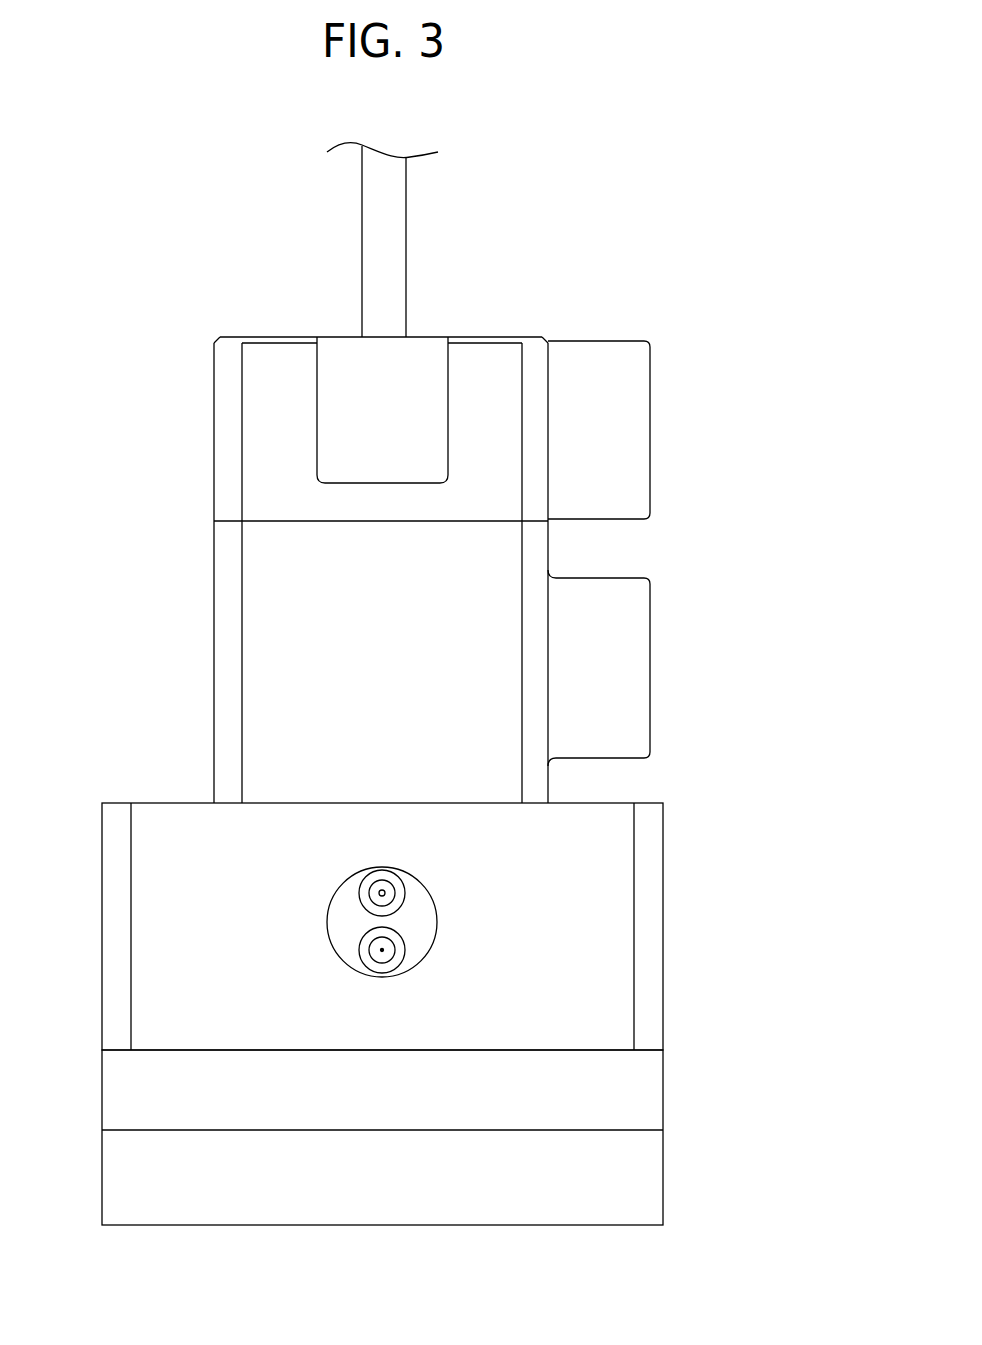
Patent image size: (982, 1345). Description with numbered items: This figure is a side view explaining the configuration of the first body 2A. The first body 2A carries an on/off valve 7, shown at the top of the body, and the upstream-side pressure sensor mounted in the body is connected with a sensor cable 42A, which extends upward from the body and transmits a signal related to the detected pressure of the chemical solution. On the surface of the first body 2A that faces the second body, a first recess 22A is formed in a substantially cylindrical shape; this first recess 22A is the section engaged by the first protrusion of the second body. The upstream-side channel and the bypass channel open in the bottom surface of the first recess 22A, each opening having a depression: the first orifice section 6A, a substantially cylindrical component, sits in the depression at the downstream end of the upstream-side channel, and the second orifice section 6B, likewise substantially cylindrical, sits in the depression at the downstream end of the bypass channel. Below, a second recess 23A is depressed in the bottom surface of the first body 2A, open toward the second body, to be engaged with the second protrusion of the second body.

The first body 2A is at (745, 224).
The on/off valve 7 is at (208, 327).
The sensor cable 42A is at (398, 233).
The first recess 22A is at (416, 922).
The first orifice section 6A is at (370, 950).
The second orifice section 6B is at (372, 893).
The second recess 23A is at (388, 1130).